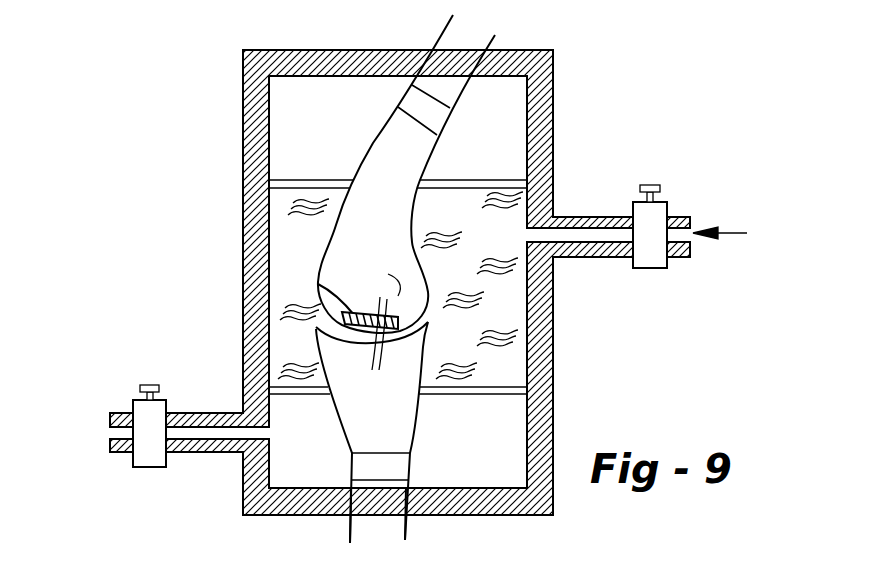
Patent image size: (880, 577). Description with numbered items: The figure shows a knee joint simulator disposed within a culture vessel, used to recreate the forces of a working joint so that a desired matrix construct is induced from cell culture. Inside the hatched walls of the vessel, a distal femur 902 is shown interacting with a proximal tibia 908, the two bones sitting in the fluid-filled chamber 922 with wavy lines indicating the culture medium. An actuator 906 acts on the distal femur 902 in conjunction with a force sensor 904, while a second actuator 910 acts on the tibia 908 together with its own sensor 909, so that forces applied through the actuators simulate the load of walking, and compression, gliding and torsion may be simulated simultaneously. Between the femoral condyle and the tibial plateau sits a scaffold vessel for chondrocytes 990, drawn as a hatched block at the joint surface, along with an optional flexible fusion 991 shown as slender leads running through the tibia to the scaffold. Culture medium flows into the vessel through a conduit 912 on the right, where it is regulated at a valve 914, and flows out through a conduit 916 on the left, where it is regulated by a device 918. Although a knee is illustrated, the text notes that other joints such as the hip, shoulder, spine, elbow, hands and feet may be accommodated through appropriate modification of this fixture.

The distal femur 902 is at (387, 163).
The force sensor 904 is at (423, 107).
The actuator 906 is at (457, 32).
The proximal tibia 908 is at (400, 415).
The sensor 909 is at (397, 470).
The actuator 910 is at (393, 525).
The conduit 912 is at (572, 258).
The regulator 914 is at (663, 210).
The conduit 916 is at (213, 450).
The device 918 is at (138, 407).
The fluid chamber 922 is at (283, 242).
The scaffold vessel for chondrocytes 990 is at (318, 284).
The flexible fusion 991 is at (367, 310).